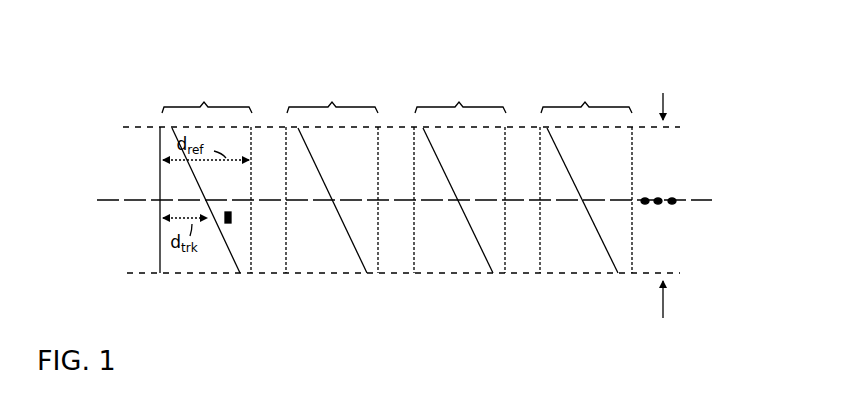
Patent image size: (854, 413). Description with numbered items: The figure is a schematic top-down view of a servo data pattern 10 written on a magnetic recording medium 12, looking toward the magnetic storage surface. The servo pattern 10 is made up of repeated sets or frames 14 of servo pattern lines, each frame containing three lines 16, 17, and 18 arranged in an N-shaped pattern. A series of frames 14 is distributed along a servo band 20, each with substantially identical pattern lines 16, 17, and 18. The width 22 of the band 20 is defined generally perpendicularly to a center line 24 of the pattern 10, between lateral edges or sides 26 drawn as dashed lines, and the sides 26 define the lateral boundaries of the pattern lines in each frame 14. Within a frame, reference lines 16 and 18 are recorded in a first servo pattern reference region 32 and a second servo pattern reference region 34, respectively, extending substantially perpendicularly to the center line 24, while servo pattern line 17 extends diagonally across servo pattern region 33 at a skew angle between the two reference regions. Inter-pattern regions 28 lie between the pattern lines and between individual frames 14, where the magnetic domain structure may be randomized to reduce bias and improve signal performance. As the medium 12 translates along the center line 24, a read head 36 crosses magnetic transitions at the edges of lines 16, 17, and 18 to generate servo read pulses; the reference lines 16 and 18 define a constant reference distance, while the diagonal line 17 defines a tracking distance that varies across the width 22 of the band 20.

The servo data pattern 10 is at (479, 52).
The magnetic recording medium 12 is at (60, 243).
The frames 14 is at (156, 93).
The reference line 16 is at (158, 175).
The servo pattern line 17 is at (198, 186).
The reference line 18 is at (377, 158).
The servo band 20 is at (690, 256).
The width 22 is at (666, 100).
The center line 24 is at (100, 198).
The sides 26 is at (402, 202).
The inter-pattern regions 28 is at (344, 149).
The first servo pattern reference region 32 is at (160, 281).
The servo pattern region 33 is at (213, 276).
The second servo pattern reference region 34 is at (251, 281).
The read head 36 is at (232, 217).